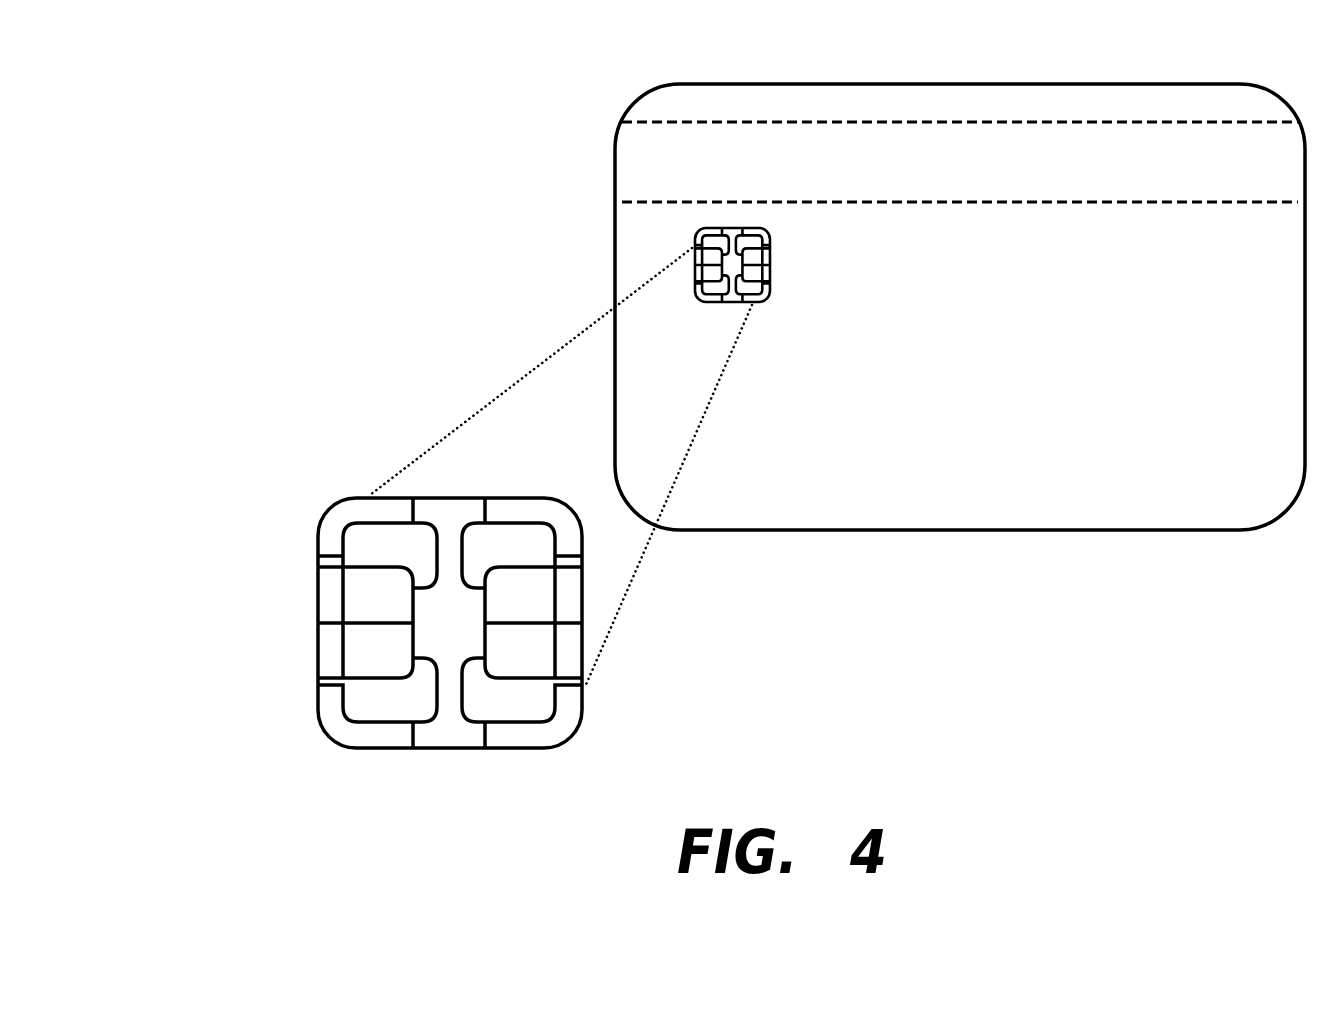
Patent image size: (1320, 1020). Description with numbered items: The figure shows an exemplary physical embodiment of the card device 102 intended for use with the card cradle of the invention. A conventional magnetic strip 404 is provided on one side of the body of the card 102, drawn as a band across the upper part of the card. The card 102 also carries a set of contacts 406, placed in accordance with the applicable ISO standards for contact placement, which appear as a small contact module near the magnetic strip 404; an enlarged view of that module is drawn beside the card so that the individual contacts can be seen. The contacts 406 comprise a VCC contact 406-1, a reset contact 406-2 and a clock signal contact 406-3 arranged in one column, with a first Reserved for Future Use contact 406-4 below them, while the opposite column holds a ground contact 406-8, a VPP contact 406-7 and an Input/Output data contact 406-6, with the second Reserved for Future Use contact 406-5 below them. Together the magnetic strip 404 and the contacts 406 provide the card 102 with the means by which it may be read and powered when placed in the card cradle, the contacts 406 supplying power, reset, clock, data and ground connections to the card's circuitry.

The card device 102 is at (1185, 532).
The magnetic strip 404 is at (632, 153).
The contacts 406 is at (768, 267).
The VCC contact 406-1 is at (353, 553).
The reset contact 406-2 is at (352, 612).
The clock signal contact 406-3 is at (352, 668).
The Reserved for Future Use (RFU) contact 406-4 is at (372, 713).
The Reserved for Future Use (RFU) contact 406-5 is at (543, 700).
The Input/Output (I/O data) contact 406-6 is at (547, 655).
The VPP contact 406-7 is at (547, 580).
The ground contact 406-8 is at (547, 550).